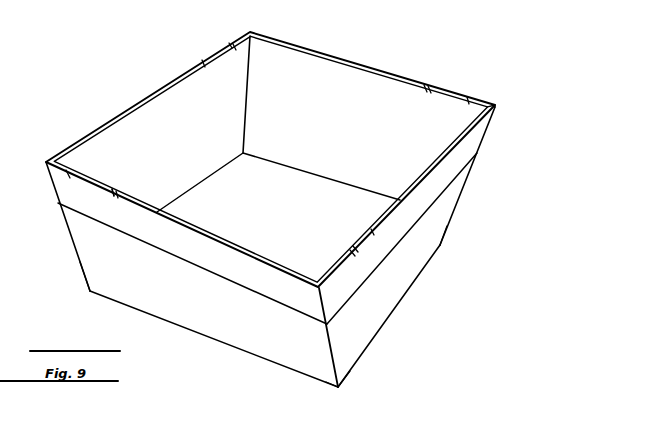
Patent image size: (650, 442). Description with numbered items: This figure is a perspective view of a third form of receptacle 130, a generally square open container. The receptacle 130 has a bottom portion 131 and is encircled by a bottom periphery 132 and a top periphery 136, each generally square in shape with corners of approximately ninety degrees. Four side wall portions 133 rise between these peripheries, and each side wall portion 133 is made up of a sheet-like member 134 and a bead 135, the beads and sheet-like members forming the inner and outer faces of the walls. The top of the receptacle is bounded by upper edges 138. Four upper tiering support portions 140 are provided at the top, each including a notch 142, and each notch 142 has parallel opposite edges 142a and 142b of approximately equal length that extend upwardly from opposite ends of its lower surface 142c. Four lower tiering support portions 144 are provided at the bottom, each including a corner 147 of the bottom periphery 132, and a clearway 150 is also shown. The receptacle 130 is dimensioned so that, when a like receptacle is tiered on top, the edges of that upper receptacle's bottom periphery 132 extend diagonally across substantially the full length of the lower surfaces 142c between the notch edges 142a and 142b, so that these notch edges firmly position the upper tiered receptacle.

The receptacle 130 is at (455, 248).
The bottom portion 131 is at (278, 191).
The bottom periphery 132 is at (355, 365).
The side wall portion 133 is at (345, 334).
The sheet-like member 134 is at (214, 339).
The bead 135 is at (192, 263).
The top periphery 136 is at (496, 110).
The upper edges 138 is at (266, 30).
The upper tiering support portion 140 is at (219, 64).
The notch 142 is at (110, 198).
The notch edge 142a is at (232, 46).
The notch edge 142b is at (425, 90).
The lower surface 142c is at (355, 252).
The lower tiering support portion 144 is at (457, 207).
The corner 147 is at (456, 221).
The clearway 150 is at (322, 118).